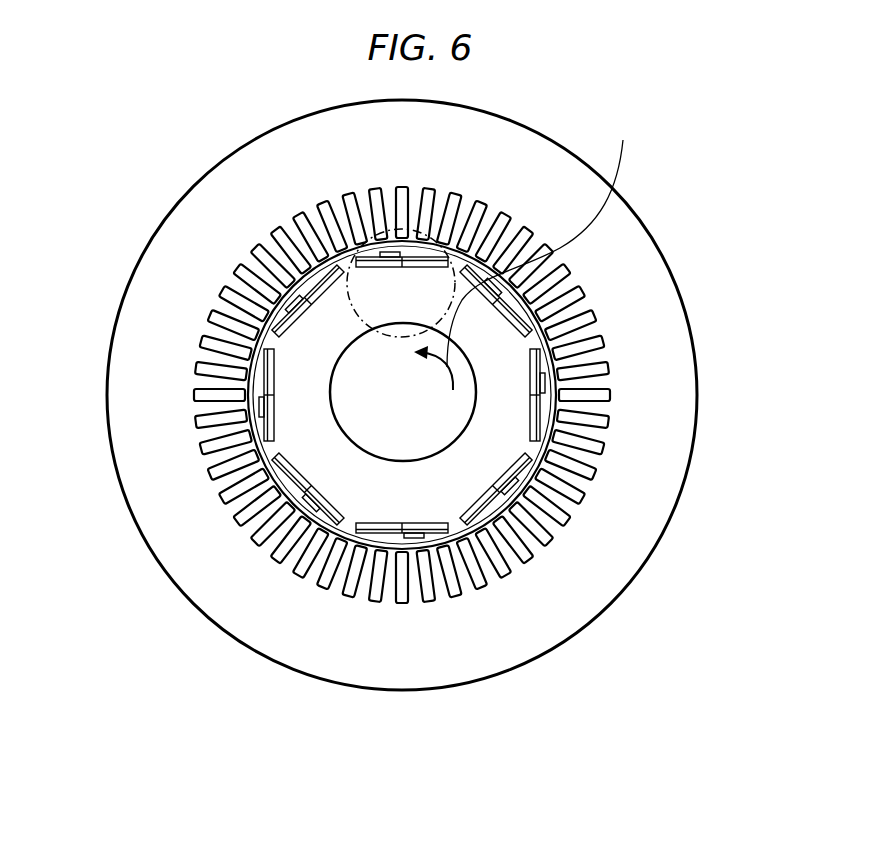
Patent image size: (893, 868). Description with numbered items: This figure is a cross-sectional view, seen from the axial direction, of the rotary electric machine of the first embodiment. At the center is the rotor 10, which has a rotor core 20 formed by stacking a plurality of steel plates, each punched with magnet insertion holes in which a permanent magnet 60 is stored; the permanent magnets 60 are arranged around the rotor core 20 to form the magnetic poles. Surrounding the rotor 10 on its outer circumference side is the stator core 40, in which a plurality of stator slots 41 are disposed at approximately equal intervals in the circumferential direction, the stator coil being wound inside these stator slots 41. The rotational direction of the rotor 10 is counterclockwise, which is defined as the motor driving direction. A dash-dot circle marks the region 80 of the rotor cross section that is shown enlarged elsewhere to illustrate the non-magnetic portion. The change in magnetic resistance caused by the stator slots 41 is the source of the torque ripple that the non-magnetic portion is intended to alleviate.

The rotor 10 is at (411, 432).
The rotor core 20 is at (411, 304).
The stator core 40 is at (177, 234).
The stator slots 41 is at (257, 247).
The permanent magnet 60 is at (550, 417).
The region 80 is at (455, 232).